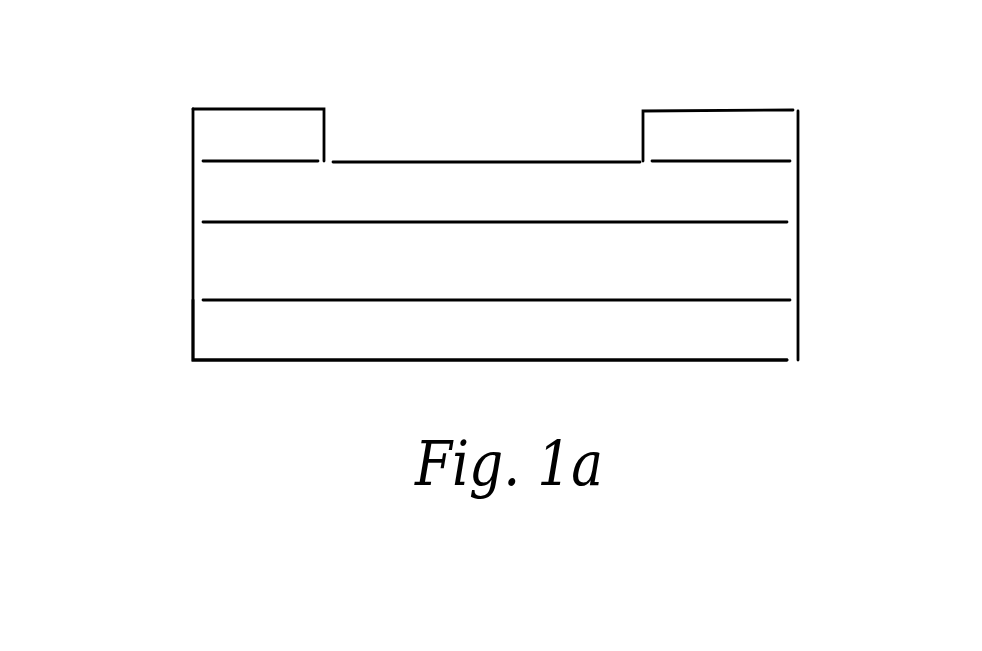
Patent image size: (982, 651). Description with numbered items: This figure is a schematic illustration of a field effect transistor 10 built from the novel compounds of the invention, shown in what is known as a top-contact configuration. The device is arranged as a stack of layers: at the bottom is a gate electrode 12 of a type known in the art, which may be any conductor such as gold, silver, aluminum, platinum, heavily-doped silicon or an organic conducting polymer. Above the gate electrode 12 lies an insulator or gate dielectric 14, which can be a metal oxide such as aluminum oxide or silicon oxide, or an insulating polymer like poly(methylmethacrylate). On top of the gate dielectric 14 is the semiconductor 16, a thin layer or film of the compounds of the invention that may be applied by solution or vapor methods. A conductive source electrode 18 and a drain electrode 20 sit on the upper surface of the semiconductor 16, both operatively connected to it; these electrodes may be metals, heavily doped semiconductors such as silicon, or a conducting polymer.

The field effect transistor 10 is at (763, 88).
The gate electrode 12 is at (702, 335).
The gate dielectric 14 is at (222, 267).
The semiconductor 16 is at (217, 192).
The source electrode 18 is at (314, 118).
The drain electrode 20 is at (667, 122).